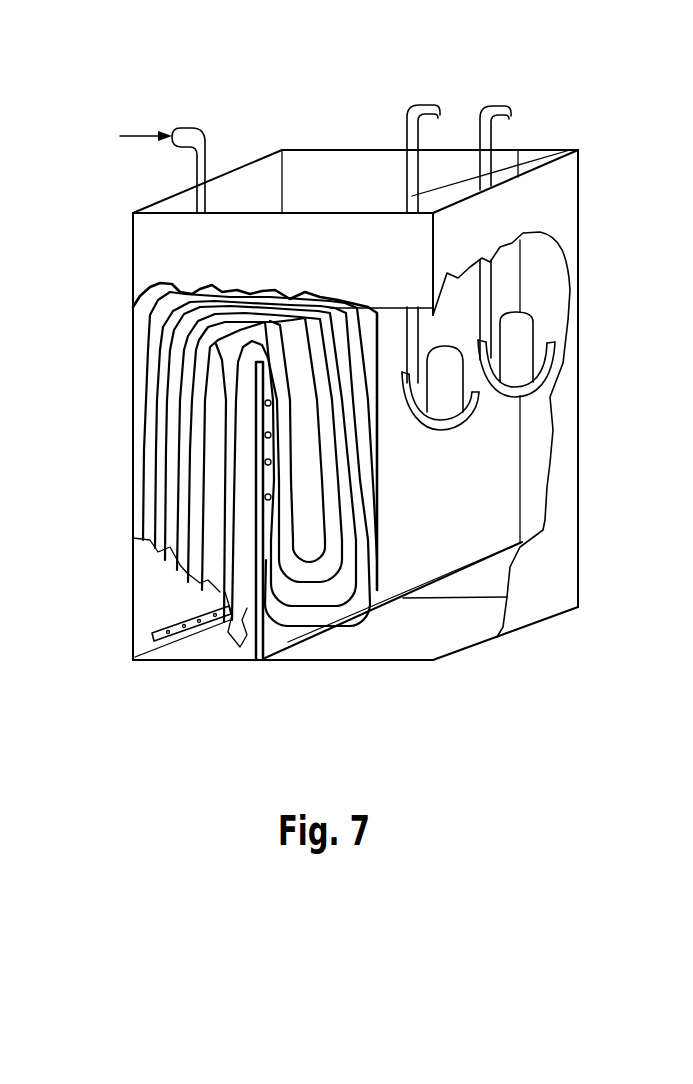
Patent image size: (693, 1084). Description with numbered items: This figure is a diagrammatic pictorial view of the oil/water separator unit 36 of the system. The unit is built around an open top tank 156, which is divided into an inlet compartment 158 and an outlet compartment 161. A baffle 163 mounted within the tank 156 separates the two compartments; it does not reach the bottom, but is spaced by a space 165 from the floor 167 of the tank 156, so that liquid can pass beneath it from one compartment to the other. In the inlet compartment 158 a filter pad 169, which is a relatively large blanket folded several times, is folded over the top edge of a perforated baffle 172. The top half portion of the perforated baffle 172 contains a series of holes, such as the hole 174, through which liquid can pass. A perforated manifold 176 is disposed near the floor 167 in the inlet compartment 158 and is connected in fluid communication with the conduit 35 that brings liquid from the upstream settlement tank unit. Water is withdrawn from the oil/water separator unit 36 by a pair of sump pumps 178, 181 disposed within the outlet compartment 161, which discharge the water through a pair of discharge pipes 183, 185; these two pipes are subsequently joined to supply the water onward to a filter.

The conduit 35 is at (200, 140).
The oil/water separator unit 36 is at (178, 714).
The open top tank 156 is at (125, 627).
The inlet compartment 158 is at (323, 172).
The outlet compartment 161 is at (538, 158).
The baffle 163 is at (507, 480).
The space 165 is at (483, 573).
The floor 167 is at (348, 650).
The filter pad 169 is at (338, 301).
The perforated baffle 172 is at (278, 641).
The hole 174 is at (270, 418).
The perforated manifold 176 is at (178, 609).
The sump pump 178 is at (484, 428).
The sump pump 181 is at (531, 304).
The discharge pipe 183 is at (440, 127).
The discharge pipe 185 is at (497, 128).